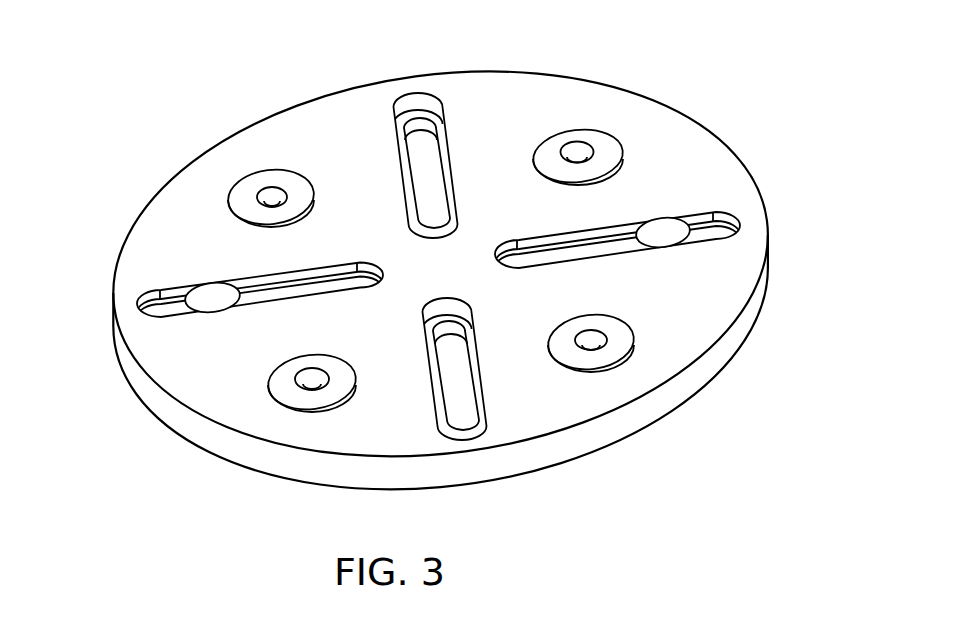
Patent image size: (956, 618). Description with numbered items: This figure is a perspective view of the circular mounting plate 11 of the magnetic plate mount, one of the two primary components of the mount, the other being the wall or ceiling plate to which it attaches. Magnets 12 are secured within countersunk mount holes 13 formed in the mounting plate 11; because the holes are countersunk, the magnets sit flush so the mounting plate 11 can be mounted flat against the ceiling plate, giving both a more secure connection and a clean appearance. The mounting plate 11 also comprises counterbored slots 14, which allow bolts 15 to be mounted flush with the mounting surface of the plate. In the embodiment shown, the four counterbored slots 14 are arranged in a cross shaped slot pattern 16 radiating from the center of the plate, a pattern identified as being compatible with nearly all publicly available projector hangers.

The mounting plate 11 is at (789, 262).
The magnets 12 is at (576, 142).
The countersunk mount holes 13 is at (622, 147).
The counterbored slots 14 is at (152, 301).
The bolts 15 is at (207, 290).
The cross shaped slot pattern 16 is at (433, 262).